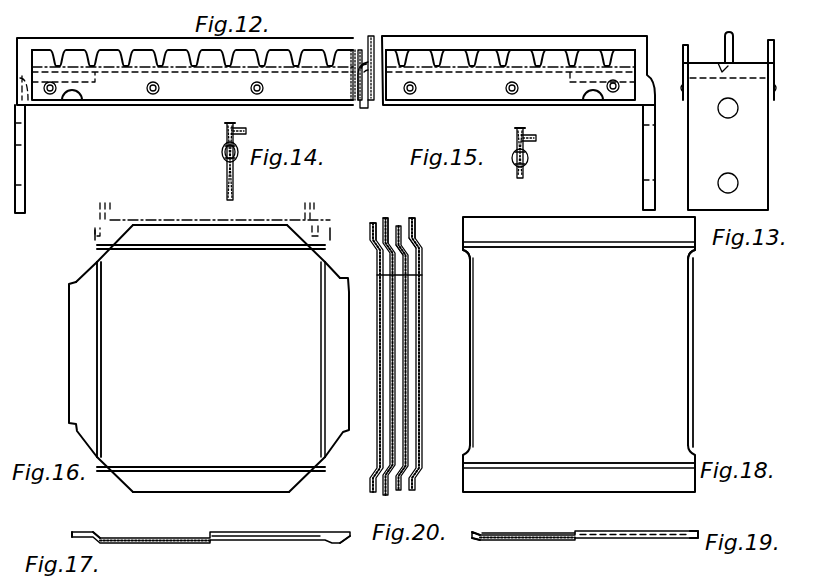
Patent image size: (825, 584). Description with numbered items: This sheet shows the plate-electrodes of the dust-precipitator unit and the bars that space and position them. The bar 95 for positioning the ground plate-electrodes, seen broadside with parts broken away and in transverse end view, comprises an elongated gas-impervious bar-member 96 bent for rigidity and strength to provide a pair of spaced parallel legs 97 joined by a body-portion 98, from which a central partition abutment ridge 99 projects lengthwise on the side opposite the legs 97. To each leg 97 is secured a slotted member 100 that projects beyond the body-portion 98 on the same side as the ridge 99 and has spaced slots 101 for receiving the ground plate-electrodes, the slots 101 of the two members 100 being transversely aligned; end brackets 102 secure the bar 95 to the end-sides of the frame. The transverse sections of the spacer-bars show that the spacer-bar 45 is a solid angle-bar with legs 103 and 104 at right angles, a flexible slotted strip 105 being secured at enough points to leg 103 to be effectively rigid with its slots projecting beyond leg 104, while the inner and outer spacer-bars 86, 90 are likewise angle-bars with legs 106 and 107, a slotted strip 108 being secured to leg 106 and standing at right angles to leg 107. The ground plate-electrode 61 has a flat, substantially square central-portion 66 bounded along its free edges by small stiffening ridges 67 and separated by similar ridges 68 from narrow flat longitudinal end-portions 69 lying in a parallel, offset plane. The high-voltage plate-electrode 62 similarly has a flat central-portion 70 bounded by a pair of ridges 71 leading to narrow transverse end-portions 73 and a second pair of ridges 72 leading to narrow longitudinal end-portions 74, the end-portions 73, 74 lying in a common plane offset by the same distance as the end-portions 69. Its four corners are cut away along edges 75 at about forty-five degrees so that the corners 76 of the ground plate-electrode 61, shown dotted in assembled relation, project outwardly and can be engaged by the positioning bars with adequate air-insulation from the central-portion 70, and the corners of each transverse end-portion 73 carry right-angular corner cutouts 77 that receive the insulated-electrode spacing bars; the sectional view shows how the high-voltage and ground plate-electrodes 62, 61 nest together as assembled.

In FIG. 15, the spacer-bar 45 is at (567, 157).
In FIG. 16, the spacer-bar 45 is at (108, 205).
In FIG. 18, the ground plate-electrode 61 is at (592, 364).
In FIG. 19, the ground plate-electrode 61 is at (622, 568).
In FIG. 16, the high-voltage plate-electrode 62 is at (215, 364).
In FIG. 17, the high-voltage plate-electrode 62 is at (268, 566).
In FIG. 20, the high-voltage plate-electrode 62 is at (398, 358).
In FIG. 20, the central-portion 66 is at (420, 296).
In FIG. 18, the central-portion 66 is at (688, 386).
In FIG. 19, the central-portion 66 is at (545, 541).
In FIG. 20, the stiffening ridges 67 is at (410, 262).
In FIG. 18, the stiffening ridges 67 is at (474, 318).
In FIG. 19, the stiffening ridges 67 is at (478, 534).
In FIG. 20, the ridges 68 is at (421, 244).
In FIG. 18, the ridges 68 is at (576, 250).
In FIG. 19, the ridges 68 is at (517, 534).
In FIG. 16, the end-portions 69 is at (150, 223).
In FIG. 20, the end-portions 69 is at (387, 220).
In FIG. 18, the end-portions 69 is at (566, 222).
In FIG. 19, the end-portions 69 is at (617, 531).
In FIG. 16, the central-portion 70 is at (115, 403).
In FIG. 17, the central-portion 70 is at (195, 543).
In FIG. 20, the central-portion 70 is at (405, 338).
In FIG. 16, the ridges 71 is at (97, 373).
In FIG. 17, the ridges 71 is at (104, 535).
In FIG. 20, the ridges 71 is at (422, 275).
In FIG. 16, the ridges 72 is at (241, 245).
In FIG. 20, the ridges 72 is at (416, 223).
In FIG. 16, the transverse end-portions 73 is at (69, 337).
In FIG. 17, the transverse end-portions 73 is at (345, 546).
In FIG. 16, the longitudinal end-portions 74 is at (190, 230).
In FIG. 17, the longitudinal end-portions 74 is at (246, 533).
In FIG. 20, the longitudinal end-portions 74 is at (371, 228).
In FIG. 16, the edges 75 is at (86, 272).
In FIG. 16, the corners 76 is at (95, 236).
In FIG. 18, the corners 76 is at (463, 480).
In FIG. 16, the corner cutouts 77 is at (70, 292).
In FIG. 14, the inner spacer-bars 86 is at (213, 158).
In FIG. 14, the outer spacer-bars 90 is at (213, 185).
In FIG. 12, the bar 95 is at (422, 29).
In FIG. 13, the bar 95 is at (712, 39).
In FIG. 12, the bar-member 96 is at (360, 78).
In FIG. 13, the bar-member 96 is at (726, 70).
In FIG. 12, the legs 97 is at (364, 104).
In FIG. 13, the legs 97 is at (686, 100).
In FIG. 12, the body-portion 98 is at (360, 48).
In FIG. 13, the body-portion 98 is at (736, 66).
In FIG. 12, the partition abutment ridge 99 is at (373, 38).
In FIG. 13, the partition abutment ridge 99 is at (734, 46).
In FIG. 12, the slotted member 100 is at (527, 48).
In FIG. 13, the slotted member 100 is at (683, 60).
In FIG. 12, the slots 101 is at (127, 52).
In FIG. 12, the end brackets 102 is at (25, 172).
In FIG. 13, the end brackets 102 is at (768, 184).
In FIG. 15, the leg 103 is at (526, 173).
In FIG. 15, the leg 104 is at (537, 138).
In FIG. 15, the slotted strip 105 is at (516, 141).
In FIG. 14, the leg 106 is at (235, 180).
In FIG. 14, the leg 107 is at (240, 136).
In FIG. 14, the slotted strip 108 is at (227, 135).